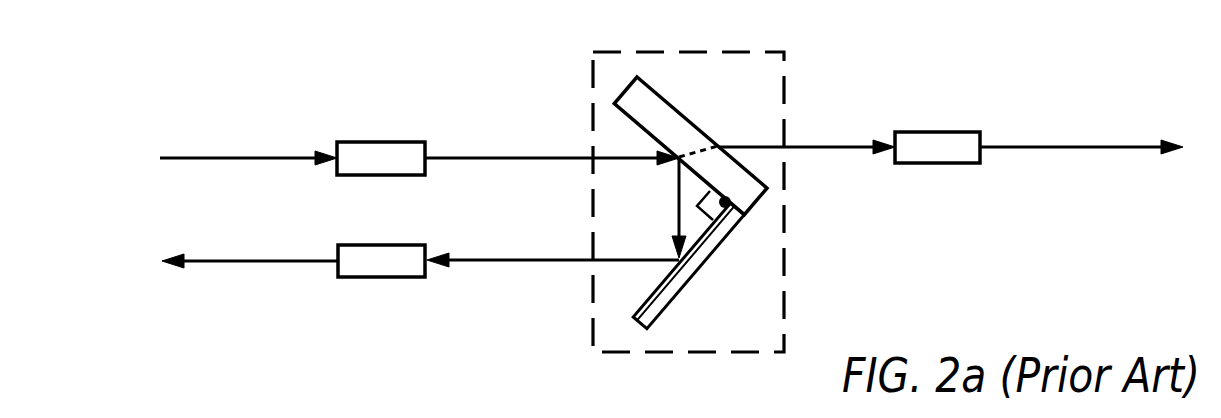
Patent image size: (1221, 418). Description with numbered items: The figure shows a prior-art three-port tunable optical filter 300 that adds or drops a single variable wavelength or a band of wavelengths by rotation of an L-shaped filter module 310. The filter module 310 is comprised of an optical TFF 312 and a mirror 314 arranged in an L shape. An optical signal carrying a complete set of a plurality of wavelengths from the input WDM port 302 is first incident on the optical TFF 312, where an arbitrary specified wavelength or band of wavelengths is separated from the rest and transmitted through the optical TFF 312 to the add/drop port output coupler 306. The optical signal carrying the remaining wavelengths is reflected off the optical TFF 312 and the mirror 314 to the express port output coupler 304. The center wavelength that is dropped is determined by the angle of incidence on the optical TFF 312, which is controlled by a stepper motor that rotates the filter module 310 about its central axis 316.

The three-port tunable optical filter 300 is at (276, 57).
The input WDM port 302 is at (379, 142).
The express port output coupler 304 is at (380, 278).
The add/drop port output coupler 306 is at (933, 132).
The L-shaped filter module 310 is at (787, 247).
The optical TFF 312 is at (697, 127).
The mirror 314 is at (723, 241).
The central axis 316 is at (725, 202).